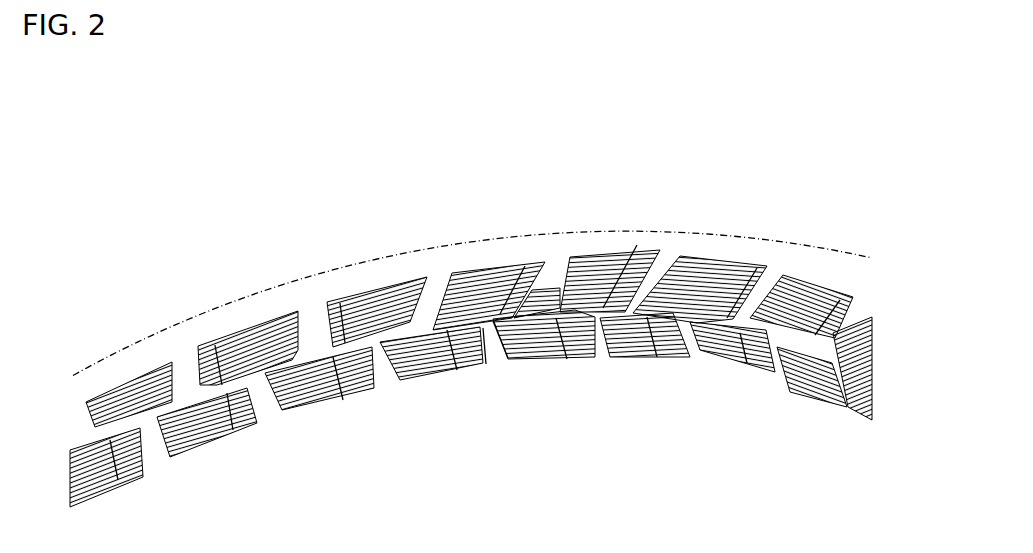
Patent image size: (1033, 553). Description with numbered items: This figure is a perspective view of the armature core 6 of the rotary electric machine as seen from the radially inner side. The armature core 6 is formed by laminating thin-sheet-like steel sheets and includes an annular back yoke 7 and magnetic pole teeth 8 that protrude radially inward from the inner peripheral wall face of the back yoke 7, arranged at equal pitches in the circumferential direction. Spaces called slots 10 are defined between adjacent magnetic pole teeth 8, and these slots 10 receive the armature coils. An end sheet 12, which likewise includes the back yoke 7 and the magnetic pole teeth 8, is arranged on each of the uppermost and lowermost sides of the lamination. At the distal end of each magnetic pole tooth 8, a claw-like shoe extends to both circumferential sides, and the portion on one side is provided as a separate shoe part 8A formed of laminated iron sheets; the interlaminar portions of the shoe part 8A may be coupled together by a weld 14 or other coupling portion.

The armature core 6 is at (722, 277).
The back yoke 7 is at (685, 240).
The magnetic pole teeth 8 is at (637, 245).
The shoe part 8A is at (660, 325).
The slots 10 is at (495, 355).
The end sheet 12 is at (367, 272).
The weld 14 is at (552, 357).